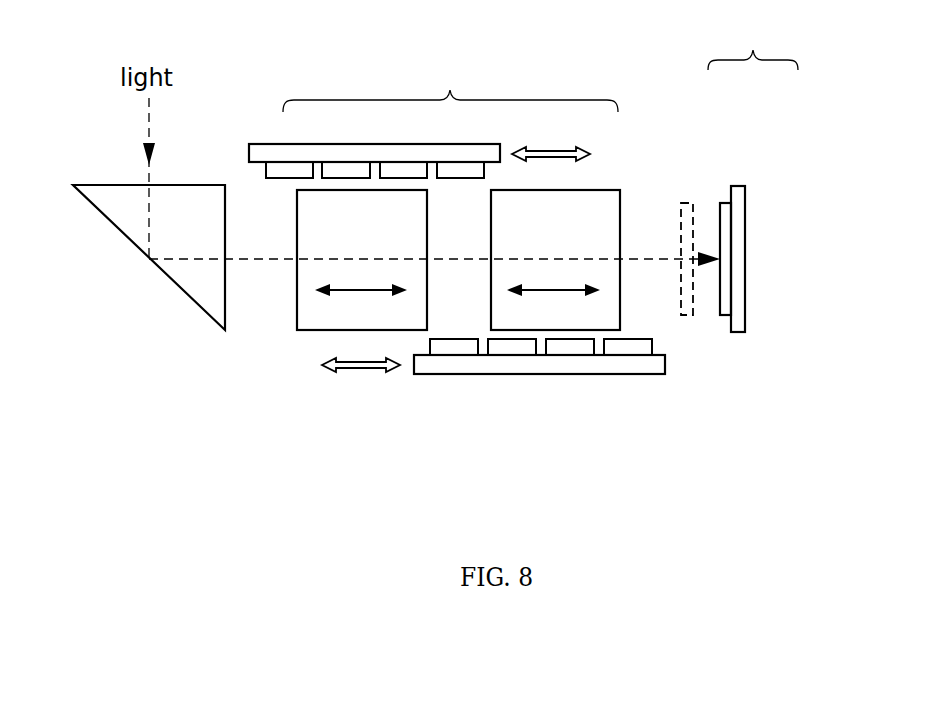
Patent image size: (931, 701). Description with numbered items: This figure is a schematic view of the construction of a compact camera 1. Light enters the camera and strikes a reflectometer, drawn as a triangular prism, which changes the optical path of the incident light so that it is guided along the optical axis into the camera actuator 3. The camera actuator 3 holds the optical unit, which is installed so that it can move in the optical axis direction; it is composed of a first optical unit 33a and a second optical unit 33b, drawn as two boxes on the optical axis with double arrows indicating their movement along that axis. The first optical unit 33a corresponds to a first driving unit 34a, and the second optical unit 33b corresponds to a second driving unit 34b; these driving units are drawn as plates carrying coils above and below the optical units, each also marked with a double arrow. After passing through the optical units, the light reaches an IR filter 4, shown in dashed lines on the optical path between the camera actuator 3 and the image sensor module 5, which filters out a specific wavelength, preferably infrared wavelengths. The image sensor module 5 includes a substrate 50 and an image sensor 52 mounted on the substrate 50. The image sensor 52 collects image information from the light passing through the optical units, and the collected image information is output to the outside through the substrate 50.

The compact camera 1 is at (150, 290).
The camera actuator 3 is at (450, 83).
The first optical unit 33a is at (300, 315).
The second optical unit 33b is at (523, 312).
The first driving unit 34a is at (276, 153).
The second driving unit 34b is at (636, 365).
The IR filter 4 is at (687, 197).
The image sensor module 5 is at (753, 40).
The image sensor 52 is at (720, 200).
The substrate 50 is at (739, 186).